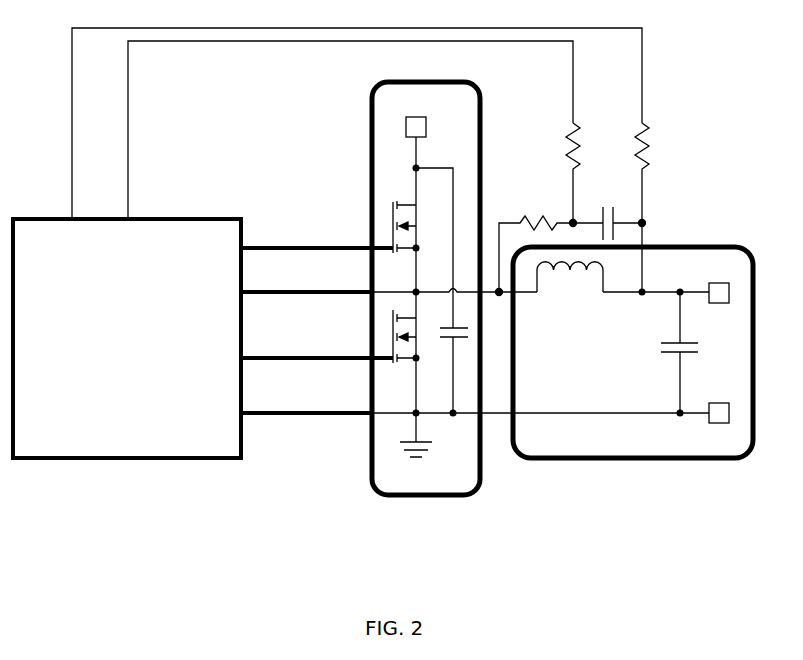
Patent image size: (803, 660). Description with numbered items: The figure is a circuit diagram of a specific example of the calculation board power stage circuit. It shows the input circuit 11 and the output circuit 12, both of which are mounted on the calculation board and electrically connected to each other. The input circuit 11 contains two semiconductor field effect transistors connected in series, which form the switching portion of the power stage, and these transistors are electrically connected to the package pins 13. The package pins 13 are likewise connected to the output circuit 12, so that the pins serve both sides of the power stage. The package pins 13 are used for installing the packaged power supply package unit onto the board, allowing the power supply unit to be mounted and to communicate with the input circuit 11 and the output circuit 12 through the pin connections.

The input circuit 11 is at (423, 495).
The output circuit 12 is at (615, 458).
The package pins 13 is at (90, 458).